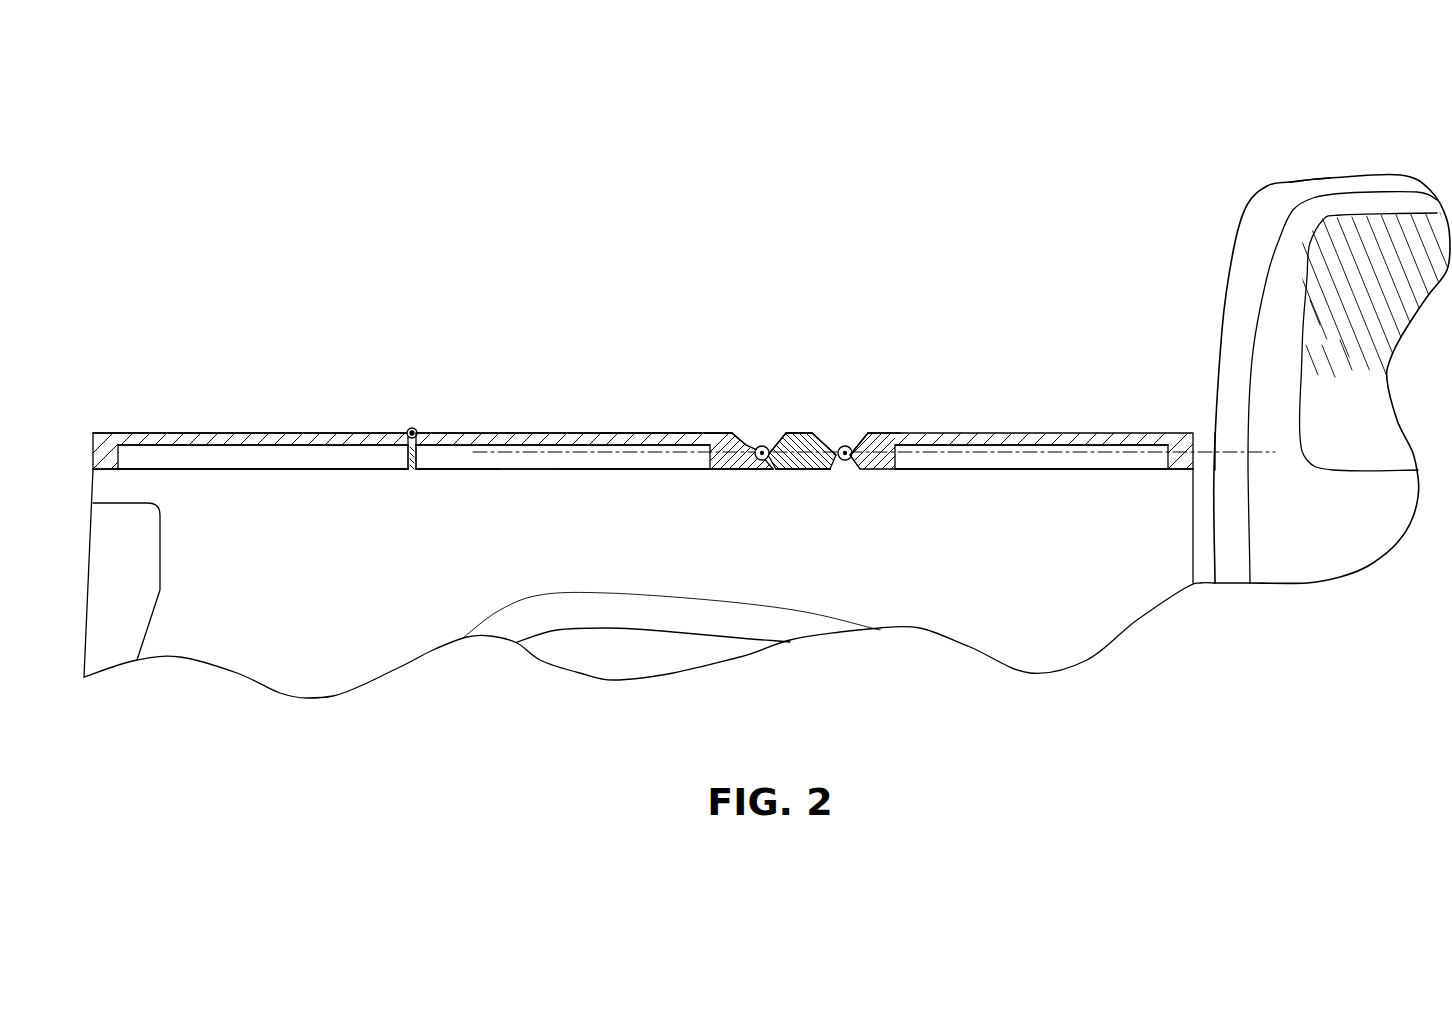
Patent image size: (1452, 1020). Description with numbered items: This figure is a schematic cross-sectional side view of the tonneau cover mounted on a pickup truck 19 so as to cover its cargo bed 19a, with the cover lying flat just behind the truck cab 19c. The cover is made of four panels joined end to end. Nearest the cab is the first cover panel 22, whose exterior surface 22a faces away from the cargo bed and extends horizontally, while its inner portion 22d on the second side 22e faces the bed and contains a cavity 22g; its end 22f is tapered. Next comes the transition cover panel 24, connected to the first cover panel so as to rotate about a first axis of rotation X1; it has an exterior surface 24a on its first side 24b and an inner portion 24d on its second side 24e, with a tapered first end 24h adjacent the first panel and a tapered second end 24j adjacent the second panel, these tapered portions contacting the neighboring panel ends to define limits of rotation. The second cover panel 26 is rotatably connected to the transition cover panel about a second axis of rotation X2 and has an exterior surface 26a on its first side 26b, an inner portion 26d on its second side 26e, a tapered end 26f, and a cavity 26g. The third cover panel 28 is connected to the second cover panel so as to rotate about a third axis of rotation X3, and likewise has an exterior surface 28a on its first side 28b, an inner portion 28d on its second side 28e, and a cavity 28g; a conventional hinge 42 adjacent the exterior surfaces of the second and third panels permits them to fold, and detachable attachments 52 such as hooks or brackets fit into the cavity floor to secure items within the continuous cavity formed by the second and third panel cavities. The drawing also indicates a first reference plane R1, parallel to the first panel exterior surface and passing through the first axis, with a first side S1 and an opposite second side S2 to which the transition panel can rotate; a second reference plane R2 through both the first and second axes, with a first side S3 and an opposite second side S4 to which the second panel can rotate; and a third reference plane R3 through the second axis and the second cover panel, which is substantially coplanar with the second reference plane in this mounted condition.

The pickup truck 19 is at (1378, 163).
The cargo bed 19a is at (538, 539).
The truck cab 19c is at (1308, 223).
The first cover panel 22 is at (1005, 425).
The exterior surface 22a is at (880, 434).
The inner portion 22d is at (1115, 470).
The second side 22e is at (940, 470).
The end of the first cover panel 22f is at (861, 440).
The cavity 22g is at (1000, 470).
The transition cover panel 24 is at (802, 420).
The exterior surface 24a is at (812, 436).
The first side 24b is at (800, 436).
The inner portion 24d is at (790, 470).
The second side 24e is at (805, 470).
The first end of the transition cover panel 24h is at (824, 439).
The second end of the transition cover panel 24j is at (780, 436).
The second cover panel 26 is at (500, 426).
The exterior surface 26a is at (565, 432).
The first side 26b is at (675, 432).
The inner portion 26d is at (450, 470).
The second side 26e is at (615, 470).
The tapered end of the second cover panel 26f is at (742, 436).
The cavity 26g is at (665, 470).
The third cover panel 28 is at (220, 426).
The exterior surface 28a is at (158, 432).
The first side 28b is at (283, 432).
The inner portion 28d is at (145, 470).
The second side 28e is at (340, 470).
The cavity 28g is at (257, 470).
The hinge 42 is at (414, 428).
The attachments 52 is at (410, 470).
The first axis of rotation X1 is at (848, 462).
The second axis of rotation X2 is at (758, 462).
The third axis of rotation X3 is at (409, 429).
The first reference plane R1 is at (1040, 458).
The second reference plane R2 is at (800, 472).
The third reference plane R3 is at (632, 440).
The first side of the first reference plane S1 is at (1176, 411).
The second side of the first reference plane S2 is at (985, 564).
The first side of the second reference plane S3 is at (791, 339).
The second side of the second reference plane S4 is at (801, 580).